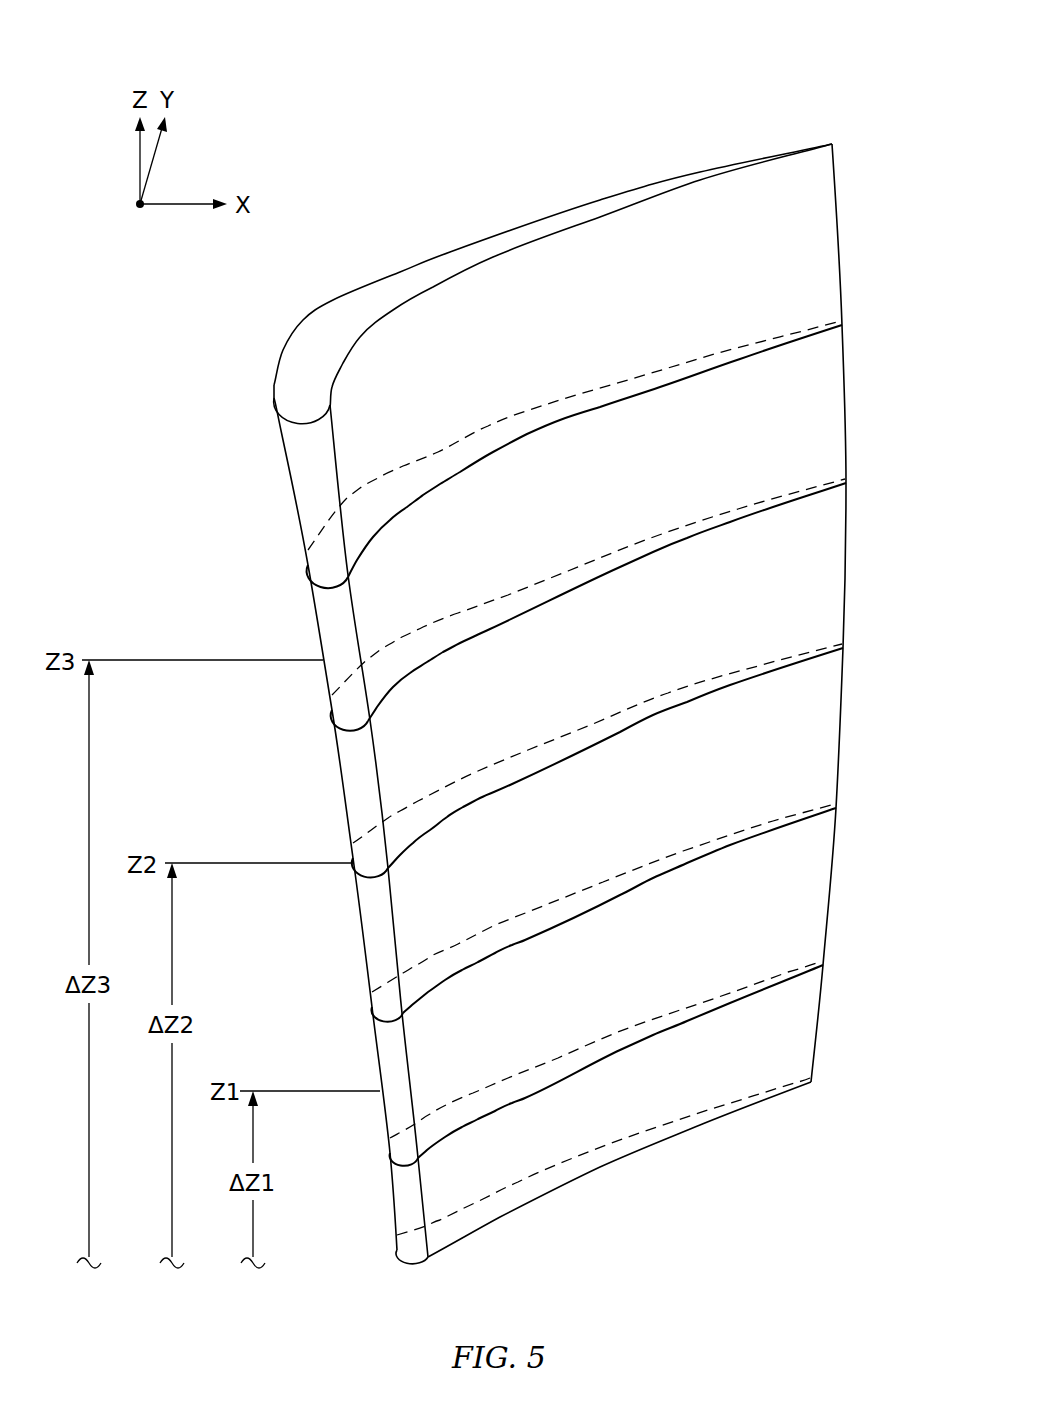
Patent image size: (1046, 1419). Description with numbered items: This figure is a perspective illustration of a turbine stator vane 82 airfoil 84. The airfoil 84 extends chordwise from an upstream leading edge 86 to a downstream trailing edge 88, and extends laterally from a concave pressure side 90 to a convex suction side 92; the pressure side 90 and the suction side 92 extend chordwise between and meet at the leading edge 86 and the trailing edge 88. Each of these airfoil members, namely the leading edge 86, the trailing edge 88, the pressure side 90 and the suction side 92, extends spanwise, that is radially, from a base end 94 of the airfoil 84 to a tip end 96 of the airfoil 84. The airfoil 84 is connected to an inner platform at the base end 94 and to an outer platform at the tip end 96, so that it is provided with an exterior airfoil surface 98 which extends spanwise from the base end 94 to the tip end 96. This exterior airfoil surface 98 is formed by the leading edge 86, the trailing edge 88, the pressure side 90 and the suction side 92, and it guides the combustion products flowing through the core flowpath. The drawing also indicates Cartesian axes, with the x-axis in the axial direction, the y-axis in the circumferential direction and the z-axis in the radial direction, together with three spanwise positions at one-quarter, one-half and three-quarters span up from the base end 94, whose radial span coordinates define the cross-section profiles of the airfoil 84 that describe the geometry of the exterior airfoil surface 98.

The stator vane 82 is at (585, 656).
The airfoil 84 is at (634, 624).
The leading edge 86 is at (310, 421).
The trailing edge 88 is at (836, 146).
The pressure side 90 is at (537, 243).
The suction side 92 is at (513, 228).
The base end 94 is at (497, 1228).
The tip end 96 is at (398, 270).
The exterior airfoil surface 98 is at (806, 401).